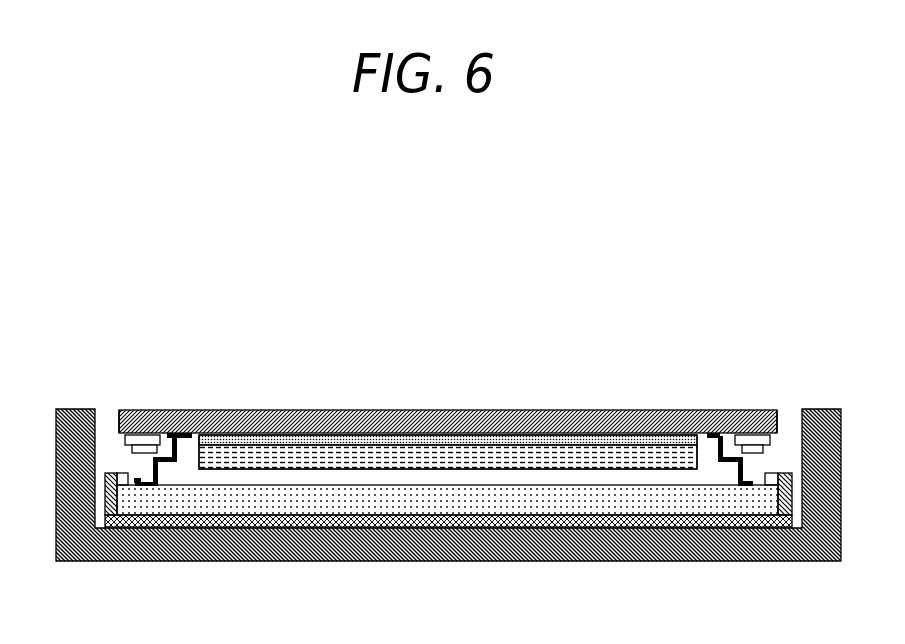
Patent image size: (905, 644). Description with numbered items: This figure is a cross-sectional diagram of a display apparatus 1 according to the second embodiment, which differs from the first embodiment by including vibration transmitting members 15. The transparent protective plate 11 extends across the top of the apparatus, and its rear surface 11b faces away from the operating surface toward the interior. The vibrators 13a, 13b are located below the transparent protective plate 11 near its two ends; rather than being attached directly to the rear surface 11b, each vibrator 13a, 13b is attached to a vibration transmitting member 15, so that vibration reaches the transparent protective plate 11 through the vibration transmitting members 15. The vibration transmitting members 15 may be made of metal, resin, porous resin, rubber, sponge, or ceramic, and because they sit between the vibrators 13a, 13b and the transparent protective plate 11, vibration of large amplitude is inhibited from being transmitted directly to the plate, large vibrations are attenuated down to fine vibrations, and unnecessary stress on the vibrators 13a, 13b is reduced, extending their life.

The display device 1 is at (448, 386).
The transparent protective plate 11 is at (247, 412).
The rear surface 11b is at (166, 436).
The first connector 13a is at (152, 452).
The second connector 13b is at (757, 452).
The vibration transmitting member 15 is at (120, 412).